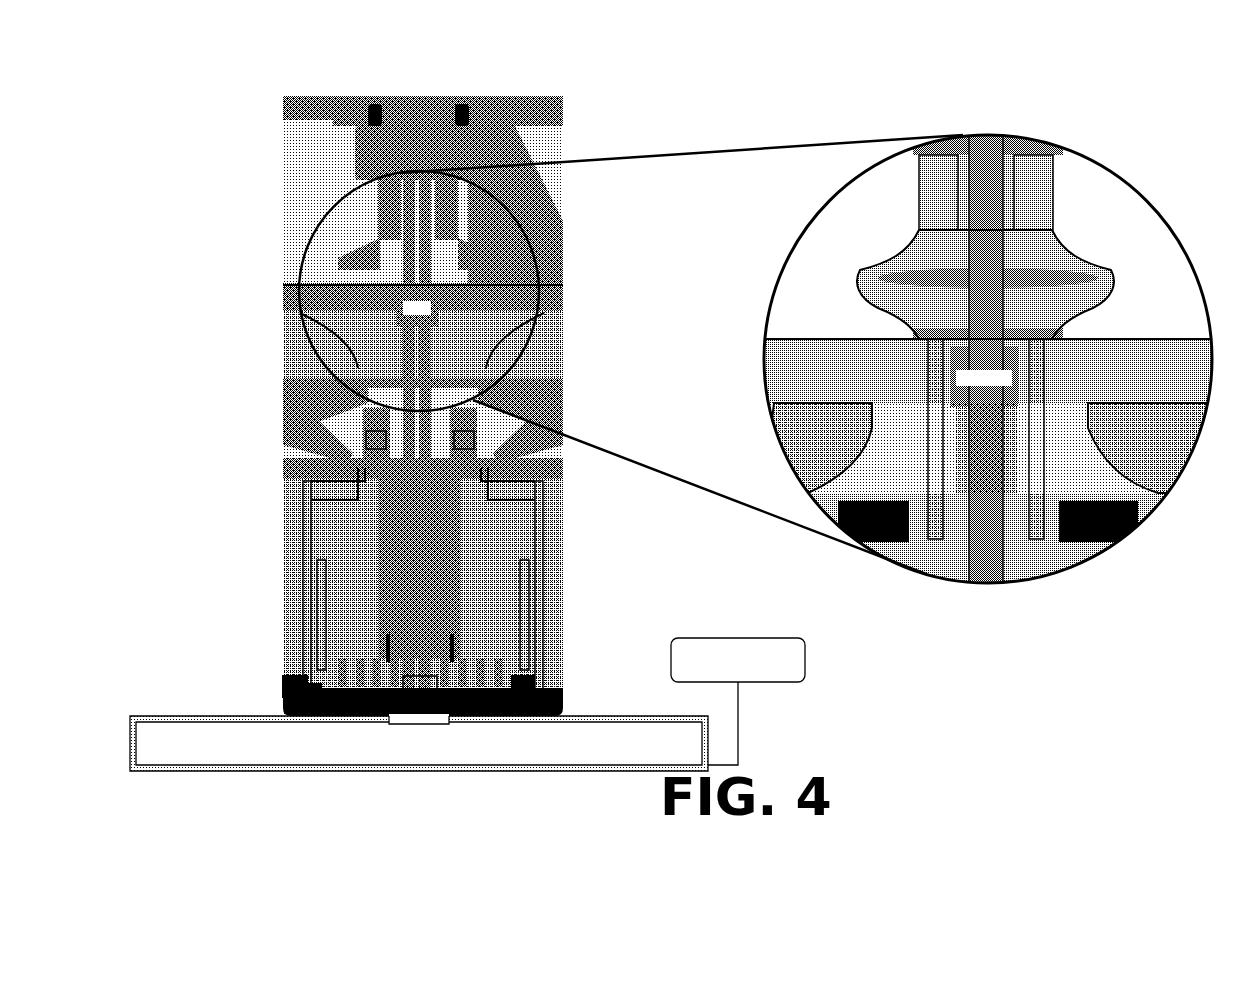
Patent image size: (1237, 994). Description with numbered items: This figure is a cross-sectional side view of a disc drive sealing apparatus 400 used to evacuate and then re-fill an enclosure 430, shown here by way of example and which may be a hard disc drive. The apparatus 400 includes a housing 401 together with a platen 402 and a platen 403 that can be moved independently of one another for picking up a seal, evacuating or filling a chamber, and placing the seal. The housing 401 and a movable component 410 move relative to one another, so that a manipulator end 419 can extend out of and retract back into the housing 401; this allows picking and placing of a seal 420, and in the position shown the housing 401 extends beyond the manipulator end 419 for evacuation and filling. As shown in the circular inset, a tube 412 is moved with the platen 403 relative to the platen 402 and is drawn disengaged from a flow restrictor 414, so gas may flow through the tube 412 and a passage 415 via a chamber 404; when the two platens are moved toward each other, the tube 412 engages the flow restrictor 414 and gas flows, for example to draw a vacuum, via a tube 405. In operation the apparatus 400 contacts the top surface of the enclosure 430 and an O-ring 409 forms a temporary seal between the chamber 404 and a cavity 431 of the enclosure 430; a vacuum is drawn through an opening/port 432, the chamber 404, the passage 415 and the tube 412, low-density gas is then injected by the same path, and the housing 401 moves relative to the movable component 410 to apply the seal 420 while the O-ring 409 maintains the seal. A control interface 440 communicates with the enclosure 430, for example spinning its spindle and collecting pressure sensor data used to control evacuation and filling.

The apparatus 400 is at (566, 77).
The housing 401 is at (287, 532).
The platen 402 is at (553, 291).
The platen 403 is at (553, 112).
The chamber 404 is at (300, 672).
The tube 405 is at (976, 464).
The O-ring 409 is at (283, 700).
The movable component 410 is at (323, 618).
The tube 412 is at (969, 222).
The flow restrictor 414 is at (976, 369).
The passage 415 is at (927, 421).
The manipulator end 419 is at (377, 682).
The seal 420 is at (447, 698).
The enclosure 430 is at (243, 712).
The cavity 431 is at (333, 727).
The opening/port 432 is at (412, 715).
The control interface 440 is at (793, 633).